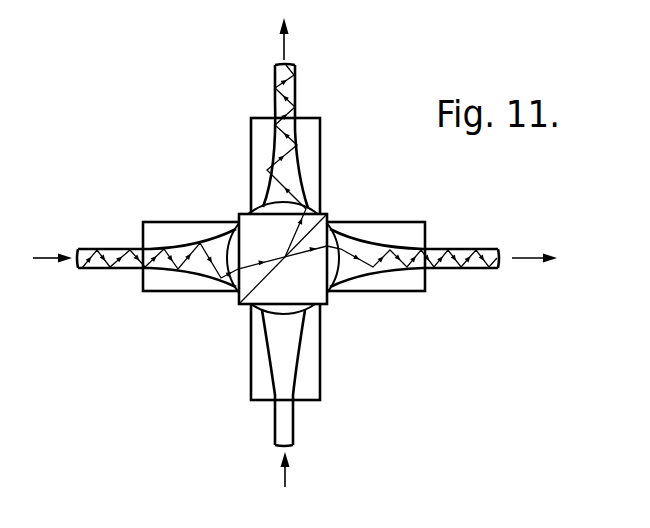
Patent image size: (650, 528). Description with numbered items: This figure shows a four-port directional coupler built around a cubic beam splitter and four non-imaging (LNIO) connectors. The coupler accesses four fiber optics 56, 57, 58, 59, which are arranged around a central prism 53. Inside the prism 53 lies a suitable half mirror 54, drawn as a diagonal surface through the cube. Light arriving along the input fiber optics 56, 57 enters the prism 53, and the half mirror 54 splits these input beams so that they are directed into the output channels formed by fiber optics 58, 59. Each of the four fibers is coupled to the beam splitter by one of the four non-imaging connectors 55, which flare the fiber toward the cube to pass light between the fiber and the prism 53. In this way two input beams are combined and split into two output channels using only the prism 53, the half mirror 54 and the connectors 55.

The prism 53 is at (305, 225).
The half mirror 54 is at (267, 280).
The non-imaging connector 55 is at (271, 363).
The fiber optic 56 is at (285, 475).
The fiber optic 57 is at (45, 260).
The fiber optic 58 is at (284, 50).
The fiber optic 59 is at (528, 258).